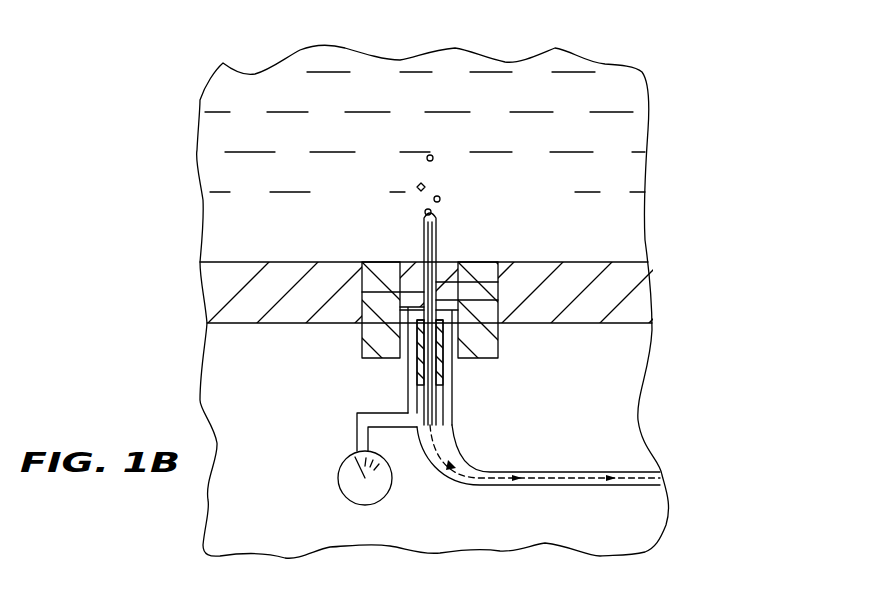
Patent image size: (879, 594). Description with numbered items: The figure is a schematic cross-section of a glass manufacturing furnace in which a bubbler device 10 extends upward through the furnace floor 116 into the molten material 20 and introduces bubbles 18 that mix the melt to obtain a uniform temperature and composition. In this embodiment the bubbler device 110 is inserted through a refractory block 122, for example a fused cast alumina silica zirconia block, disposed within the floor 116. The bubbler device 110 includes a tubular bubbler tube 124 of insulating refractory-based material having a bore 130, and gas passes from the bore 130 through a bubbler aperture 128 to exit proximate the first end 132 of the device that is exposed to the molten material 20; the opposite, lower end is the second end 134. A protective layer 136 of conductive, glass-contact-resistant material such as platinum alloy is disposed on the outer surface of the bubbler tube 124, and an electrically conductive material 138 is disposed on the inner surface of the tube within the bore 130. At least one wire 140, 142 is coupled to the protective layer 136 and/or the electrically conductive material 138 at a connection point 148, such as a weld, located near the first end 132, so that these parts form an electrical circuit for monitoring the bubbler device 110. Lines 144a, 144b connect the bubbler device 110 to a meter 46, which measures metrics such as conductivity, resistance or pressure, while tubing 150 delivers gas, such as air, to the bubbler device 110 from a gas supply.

The bubbler device 10 is at (672, 229).
The bubbles 18 is at (462, 175).
The molten material 20 is at (626, 90).
The meter 46 is at (338, 477).
The bubbler device 110 is at (423, 229).
The floor 116 is at (598, 288).
The refractory block 122 is at (360, 340).
The bubbler tube 124 is at (421, 307).
The bubbler aperture 128 is at (422, 211).
The bore 130 is at (482, 284).
The first end 132 is at (438, 184).
The second end 134 is at (462, 415).
The protective layer 136 is at (438, 248).
The electrically conductive material 138 is at (438, 229).
The wire 140 is at (408, 293).
The wire 142 is at (500, 301).
The line 144a is at (453, 385).
The line 144b is at (408, 384).
The connection point 148 is at (438, 209).
The tubing 150 is at (566, 487).